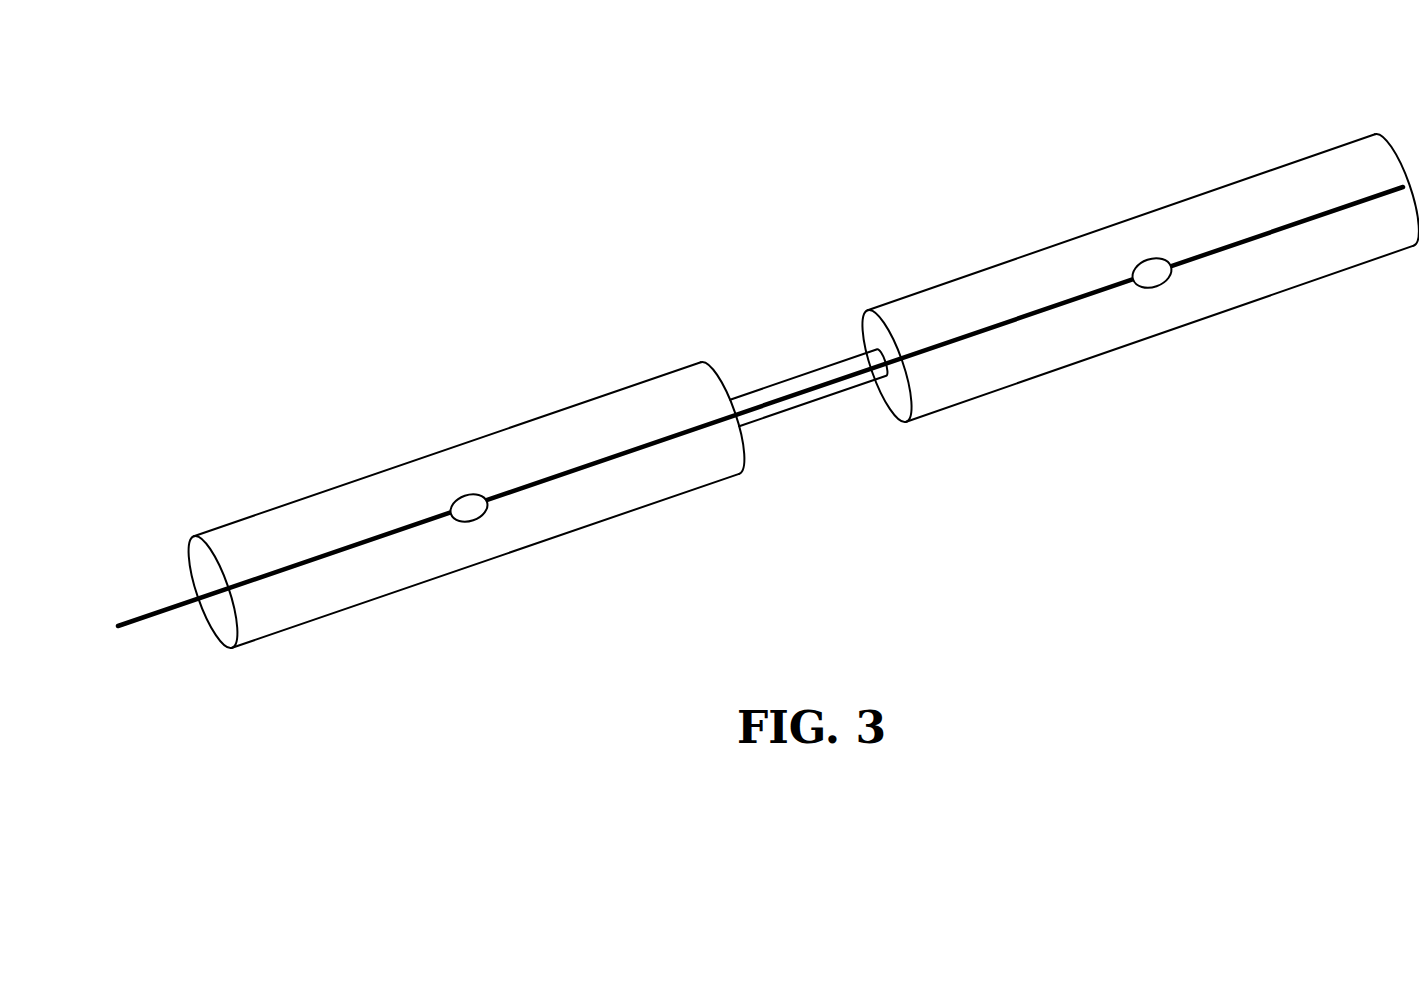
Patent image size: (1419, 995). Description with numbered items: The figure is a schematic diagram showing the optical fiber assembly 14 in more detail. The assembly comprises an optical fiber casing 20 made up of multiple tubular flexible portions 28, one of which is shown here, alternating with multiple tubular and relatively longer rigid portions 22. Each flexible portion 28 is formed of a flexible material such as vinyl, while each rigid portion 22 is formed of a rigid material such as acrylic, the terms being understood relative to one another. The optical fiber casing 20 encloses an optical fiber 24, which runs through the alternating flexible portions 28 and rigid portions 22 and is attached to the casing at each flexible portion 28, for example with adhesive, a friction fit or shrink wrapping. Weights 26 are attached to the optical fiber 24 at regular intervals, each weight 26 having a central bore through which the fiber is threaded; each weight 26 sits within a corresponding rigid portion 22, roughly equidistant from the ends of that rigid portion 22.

The optical fiber assembly 14 is at (768, 363).
The optical fiber casing 20 is at (768, 391).
The rigid portion 22 is at (605, 518).
The optical fiber 24 is at (596, 458).
The weight 26 is at (467, 503).
The flexible portion 28 is at (802, 375).